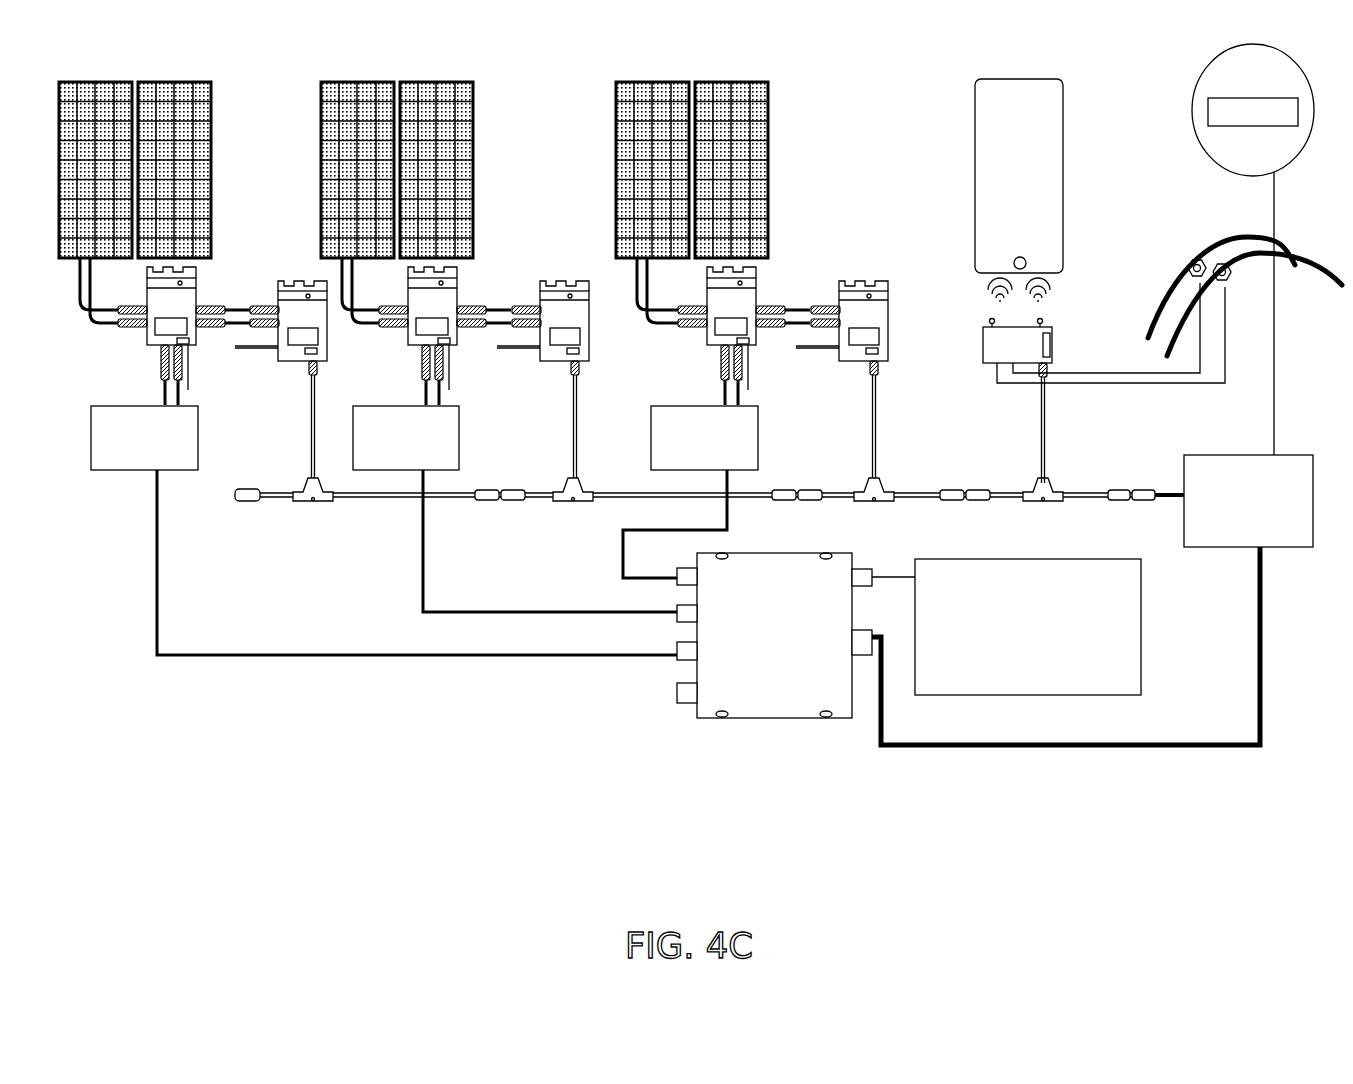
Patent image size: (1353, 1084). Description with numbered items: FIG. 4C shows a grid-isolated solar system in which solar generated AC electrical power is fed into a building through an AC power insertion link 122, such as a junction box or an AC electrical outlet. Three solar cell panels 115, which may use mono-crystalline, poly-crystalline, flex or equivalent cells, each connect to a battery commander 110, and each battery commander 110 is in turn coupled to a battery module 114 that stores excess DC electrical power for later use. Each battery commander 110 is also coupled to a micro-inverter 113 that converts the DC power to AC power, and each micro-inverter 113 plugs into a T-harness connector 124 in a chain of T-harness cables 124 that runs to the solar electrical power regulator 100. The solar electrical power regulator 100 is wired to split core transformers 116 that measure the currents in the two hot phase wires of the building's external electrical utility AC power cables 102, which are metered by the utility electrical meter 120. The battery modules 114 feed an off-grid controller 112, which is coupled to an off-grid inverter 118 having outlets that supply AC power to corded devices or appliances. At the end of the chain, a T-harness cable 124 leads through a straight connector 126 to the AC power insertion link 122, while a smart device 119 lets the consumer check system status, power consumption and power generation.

The solar electrical power regulator 100 is at (1104, 383).
The external electrical utility AC power cables 102 is at (1233, 303).
The battery commander 110 is at (445, 331).
The off-grid controller 112 is at (774, 635).
The micro-inverter 113 is at (561, 383).
The battery module 114 is at (424, 530).
The solar cell panel 115 is at (413, 151).
The split core transformer 116 is at (1188, 264).
The off-grid inverter 118 is at (1006, 627).
The smart device 119 is at (1019, 190).
The utility electrical meter 120 is at (1253, 249).
The AC power insertion link 122 is at (1082, 600).
The T-harness connector 124 is at (695, 474).
The straight connector 126 is at (1146, 479).